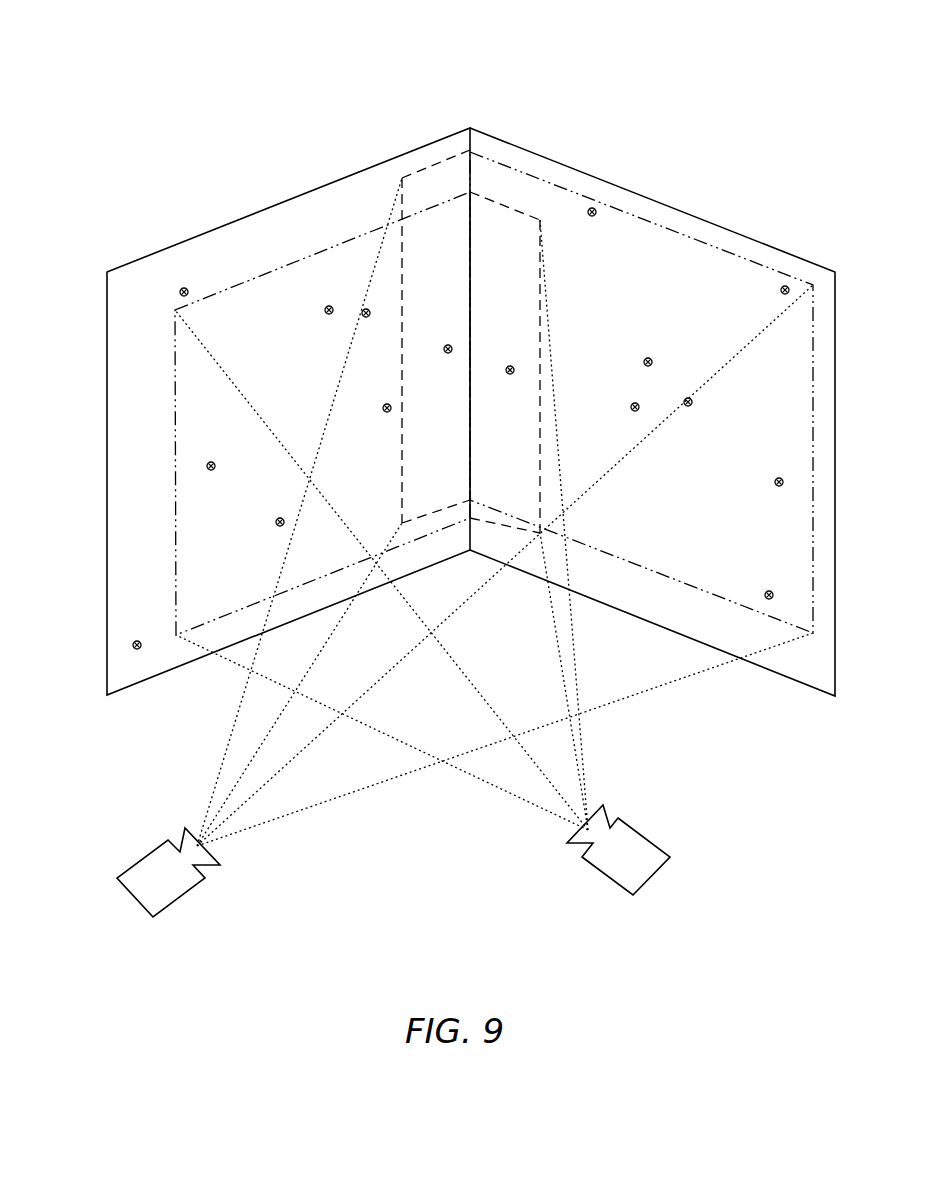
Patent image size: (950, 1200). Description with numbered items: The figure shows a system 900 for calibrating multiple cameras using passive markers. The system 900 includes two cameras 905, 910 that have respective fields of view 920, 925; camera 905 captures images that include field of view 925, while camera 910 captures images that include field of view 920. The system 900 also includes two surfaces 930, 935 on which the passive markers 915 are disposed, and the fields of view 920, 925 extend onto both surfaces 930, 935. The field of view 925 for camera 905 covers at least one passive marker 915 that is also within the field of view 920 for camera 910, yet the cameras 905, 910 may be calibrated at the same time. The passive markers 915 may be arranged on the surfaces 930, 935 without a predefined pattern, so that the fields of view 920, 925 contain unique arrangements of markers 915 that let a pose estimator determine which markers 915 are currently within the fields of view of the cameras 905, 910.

The system 900 is at (205, 57).
The camera 905 is at (134, 897).
The camera 910 is at (656, 878).
The passive markers 915 is at (276, 522).
The field of view 920 is at (175, 355).
The field of view 925 is at (758, 254).
The surface 930 is at (373, 166).
The surface 935 is at (568, 166).